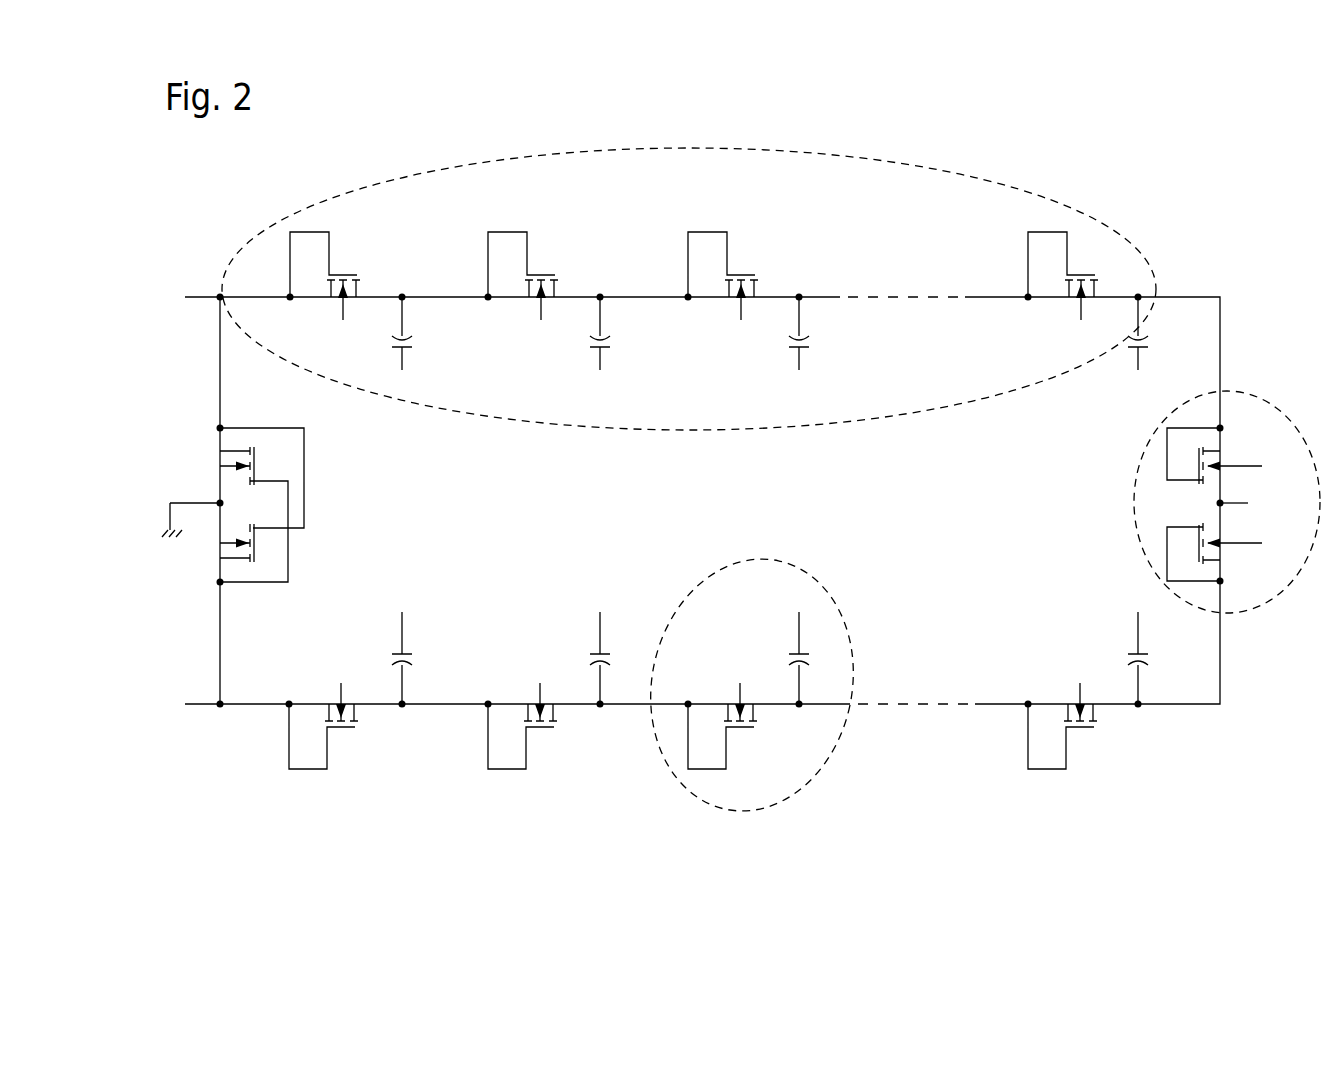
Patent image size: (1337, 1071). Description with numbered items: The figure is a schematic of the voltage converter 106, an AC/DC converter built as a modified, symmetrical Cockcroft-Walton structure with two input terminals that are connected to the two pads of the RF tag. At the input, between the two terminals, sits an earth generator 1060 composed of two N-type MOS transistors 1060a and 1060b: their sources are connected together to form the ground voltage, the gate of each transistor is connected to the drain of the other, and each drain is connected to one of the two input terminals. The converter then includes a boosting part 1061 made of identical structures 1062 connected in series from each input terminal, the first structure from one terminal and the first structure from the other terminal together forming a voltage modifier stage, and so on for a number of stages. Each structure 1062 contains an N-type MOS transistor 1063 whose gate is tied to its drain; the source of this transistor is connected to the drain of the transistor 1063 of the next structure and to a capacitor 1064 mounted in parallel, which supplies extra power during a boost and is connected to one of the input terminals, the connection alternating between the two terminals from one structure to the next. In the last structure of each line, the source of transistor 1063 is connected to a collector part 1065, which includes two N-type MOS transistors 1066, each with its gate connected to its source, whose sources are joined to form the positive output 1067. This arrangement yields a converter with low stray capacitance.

The voltage converter 106 is at (1190, 157).
The earth generator 1060 is at (320, 510).
The N-type MOS transistor 1060a is at (214, 448).
The N-type MOS transistor 1060b is at (213, 560).
The boosting part 1061 is at (975, 177).
The structure 1062 is at (692, 808).
The N-type MOS transistor 1063 is at (342, 273).
The capacitor 1064 is at (412, 345).
The collector part 1065 is at (1130, 505).
The N-type MOS transistor 1066 is at (1227, 458).
The VPOS output 1067 is at (1228, 518).